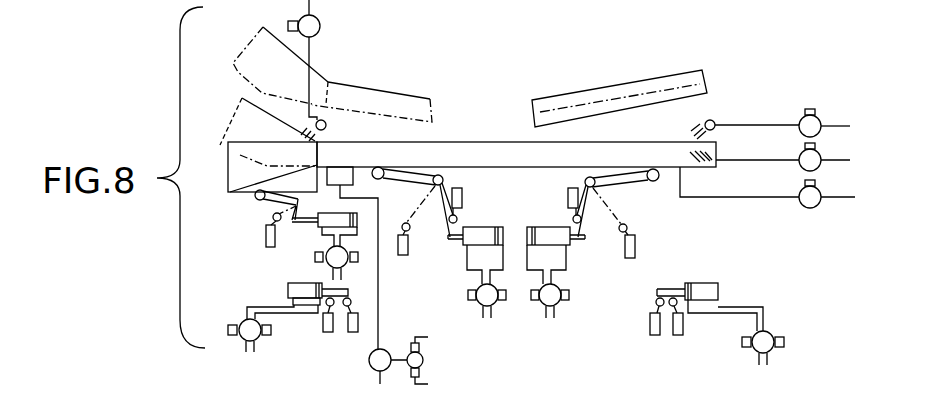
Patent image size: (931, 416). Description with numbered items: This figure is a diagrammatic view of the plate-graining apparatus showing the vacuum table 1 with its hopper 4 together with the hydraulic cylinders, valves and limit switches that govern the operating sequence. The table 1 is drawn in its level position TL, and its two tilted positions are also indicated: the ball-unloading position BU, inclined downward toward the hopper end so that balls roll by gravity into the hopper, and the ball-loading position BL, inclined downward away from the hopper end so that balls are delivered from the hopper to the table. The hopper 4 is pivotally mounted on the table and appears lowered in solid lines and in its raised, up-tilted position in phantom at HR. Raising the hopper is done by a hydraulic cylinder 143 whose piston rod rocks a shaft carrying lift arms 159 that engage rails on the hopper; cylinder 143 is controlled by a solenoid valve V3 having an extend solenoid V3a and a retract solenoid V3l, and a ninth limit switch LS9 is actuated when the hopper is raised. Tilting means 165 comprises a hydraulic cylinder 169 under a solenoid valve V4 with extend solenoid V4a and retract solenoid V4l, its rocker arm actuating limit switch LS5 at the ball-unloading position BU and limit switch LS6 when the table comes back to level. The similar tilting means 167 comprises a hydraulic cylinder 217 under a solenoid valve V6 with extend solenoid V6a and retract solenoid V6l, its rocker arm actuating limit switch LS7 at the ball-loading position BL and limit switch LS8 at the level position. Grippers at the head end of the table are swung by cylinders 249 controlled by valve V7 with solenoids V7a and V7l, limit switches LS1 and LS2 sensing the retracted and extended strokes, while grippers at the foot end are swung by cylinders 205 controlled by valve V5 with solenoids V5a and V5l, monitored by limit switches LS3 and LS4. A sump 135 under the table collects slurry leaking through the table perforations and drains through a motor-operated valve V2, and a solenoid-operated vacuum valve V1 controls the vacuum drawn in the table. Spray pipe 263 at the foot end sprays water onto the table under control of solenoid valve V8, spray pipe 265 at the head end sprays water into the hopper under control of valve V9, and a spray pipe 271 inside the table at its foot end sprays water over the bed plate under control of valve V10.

The vacuum table 1 is at (418, 97).
The hopper 4 is at (262, 28).
The raised up-tilted position of the hopper HR is at (233, 67).
The ball-loading position BL is at (372, 88).
The ball-unloading position BU is at (705, 82).
The level position of the table TL is at (577, 141).
The solenoid valve V9 is at (321, 24).
The spray pipe 265 is at (326, 126).
The spray pipe 263 is at (714, 121).
The solenoid valve V8 is at (820, 118).
The solenoid valve V10 is at (820, 153).
The vacuum valve V1 is at (812, 208).
The spray pipe 271 is at (698, 155).
The trough or sump 135 is at (342, 176).
The means for tilting the table to its ball-loading position 167 is at (414, 168).
The means for tilting the table to its ball-unloading position 165 is at (627, 168).
The eighth limit switch LS8 is at (461, 190).
The seventh limit switch LS7 is at (403, 255).
The sixth limit switch LS6 is at (569, 190).
The fifth limit switch LS5 is at (630, 258).
The hydraulic cylinder 217 is at (502, 226).
The hydraulic cylinder 169 is at (558, 226).
The solenoid valve V6 is at (477, 290).
The retract solenoid V6l is at (470, 300).
The extend solenoid V6a is at (503, 303).
The solenoid valve V4 is at (560, 287).
The retract solenoid V4l is at (570, 300).
The extend solenoid V4a is at (534, 300).
The lift arms 159 is at (258, 203).
The ninth limit switch LS9 is at (266, 232).
The hydraulic cylinder 143 is at (337, 212).
The solenoid valve V3 is at (326, 254).
The retract solenoid V3l is at (315, 260).
The extend solenoid V3a is at (360, 262).
The hydraulic cylinder 249 is at (288, 291).
The solenoid valve V7 is at (240, 321).
The retract solenoid V7l is at (288, 330).
The extend solenoid V7a is at (239, 338).
The first limit switch LS1 is at (326, 332).
The second limit switch LS2 is at (352, 332).
The drain valve V2 is at (371, 369).
The hydraulic cylinder 205 is at (712, 283).
The solenoid valve V5 is at (774, 332).
The retract solenoid V5l is at (745, 348).
The extend solenoid V5a is at (781, 348).
The fourth limit switch LS4 is at (654, 335).
The third limit switch LS3 is at (678, 335).